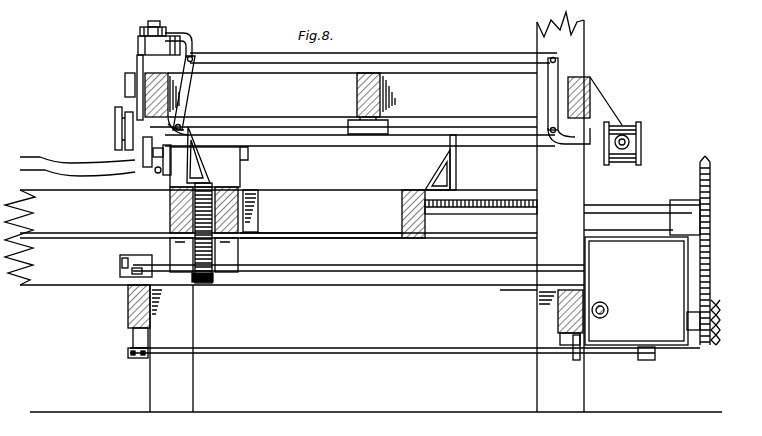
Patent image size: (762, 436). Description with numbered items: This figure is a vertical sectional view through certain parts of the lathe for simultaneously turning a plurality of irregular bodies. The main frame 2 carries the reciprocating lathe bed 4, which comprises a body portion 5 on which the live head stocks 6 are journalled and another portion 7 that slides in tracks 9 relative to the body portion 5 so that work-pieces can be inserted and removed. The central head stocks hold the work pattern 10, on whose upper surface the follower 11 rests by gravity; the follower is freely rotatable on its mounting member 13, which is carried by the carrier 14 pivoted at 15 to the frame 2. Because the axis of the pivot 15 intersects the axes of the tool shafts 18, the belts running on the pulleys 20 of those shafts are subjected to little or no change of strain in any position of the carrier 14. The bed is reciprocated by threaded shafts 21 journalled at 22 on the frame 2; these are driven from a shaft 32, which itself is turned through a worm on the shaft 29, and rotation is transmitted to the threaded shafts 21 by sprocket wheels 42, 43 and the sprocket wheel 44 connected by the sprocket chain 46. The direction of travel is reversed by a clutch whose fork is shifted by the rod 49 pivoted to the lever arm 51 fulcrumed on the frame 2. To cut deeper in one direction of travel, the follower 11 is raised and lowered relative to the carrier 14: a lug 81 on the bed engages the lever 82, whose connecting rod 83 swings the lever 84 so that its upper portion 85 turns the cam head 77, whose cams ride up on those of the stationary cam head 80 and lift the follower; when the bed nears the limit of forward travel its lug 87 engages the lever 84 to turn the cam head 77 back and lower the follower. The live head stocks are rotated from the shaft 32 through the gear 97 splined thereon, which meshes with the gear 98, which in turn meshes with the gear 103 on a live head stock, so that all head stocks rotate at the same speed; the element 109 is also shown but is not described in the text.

The main frame 2 is at (363, 212).
The lathe bed 4 is at (321, 224).
The body portion of lathe bed 5 is at (244, 192).
The live head stocks 6 is at (160, 190).
The slidable portion of lathe bed 7 is at (125, 200).
The tracks 9 is at (66, 218).
The work pattern 10 is at (60, 168).
The follower 11 is at (118, 122).
The mounting member 13 is at (115, 110).
The carrier 14 is at (270, 96).
The pivot of carrier 15 is at (628, 132).
The tool shafts 18 is at (360, 147).
The pulleys 20 is at (620, 165).
The threaded shafts 21 is at (492, 201).
The journals of threaded shafts 22 is at (682, 201).
The shaft of pulley 29 is at (608, 304).
The shaft 32 is at (362, 269).
The sprocket wheel 42 is at (692, 335).
The sprocket wheel 43 is at (716, 344).
The sprocket wheel 44 is at (712, 207).
The sprocket chain 46 is at (712, 268).
The rod 49 is at (340, 351).
The lever arm 51 is at (128, 357).
The cam head 77 is at (142, 37).
The stationary cam head 80 is at (138, 46).
The lug 81 is at (458, 165).
The lever 82 is at (547, 91).
The connecting rod 83 is at (452, 60).
The lever 84 is at (192, 100).
The upper portion of lever 85 is at (195, 37).
The lug 87 is at (202, 147).
The gear 97 is at (205, 284).
The gear 98 is at (261, 212).
The gear 103 is at (243, 165).
The pin 109 is at (150, 186).